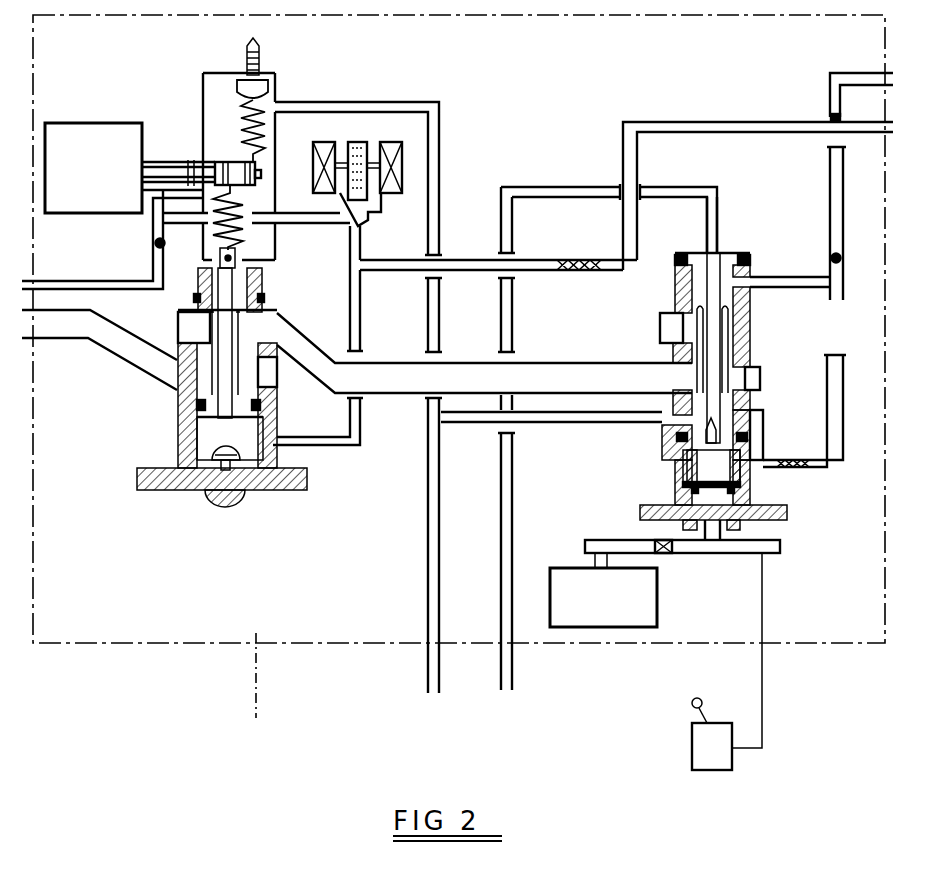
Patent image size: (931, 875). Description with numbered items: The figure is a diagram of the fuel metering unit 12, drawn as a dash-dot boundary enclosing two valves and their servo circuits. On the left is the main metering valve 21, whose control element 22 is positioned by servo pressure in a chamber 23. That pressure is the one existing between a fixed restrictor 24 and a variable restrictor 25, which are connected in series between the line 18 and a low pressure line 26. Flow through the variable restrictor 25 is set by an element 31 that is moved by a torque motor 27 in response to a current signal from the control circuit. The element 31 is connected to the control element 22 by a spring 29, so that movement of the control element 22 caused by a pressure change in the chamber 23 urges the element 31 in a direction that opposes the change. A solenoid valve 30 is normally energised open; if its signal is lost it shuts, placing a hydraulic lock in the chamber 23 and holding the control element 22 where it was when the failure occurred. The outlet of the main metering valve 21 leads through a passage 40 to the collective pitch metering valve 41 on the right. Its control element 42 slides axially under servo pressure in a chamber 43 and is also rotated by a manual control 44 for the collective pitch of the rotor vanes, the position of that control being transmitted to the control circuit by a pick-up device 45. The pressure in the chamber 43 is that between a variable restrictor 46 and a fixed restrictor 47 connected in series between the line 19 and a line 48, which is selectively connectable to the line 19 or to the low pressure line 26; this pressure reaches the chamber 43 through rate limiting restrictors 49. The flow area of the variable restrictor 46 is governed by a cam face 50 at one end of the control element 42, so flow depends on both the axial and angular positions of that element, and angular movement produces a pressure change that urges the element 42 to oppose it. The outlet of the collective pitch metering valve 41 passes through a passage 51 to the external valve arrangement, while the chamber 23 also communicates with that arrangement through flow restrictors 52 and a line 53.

The fuel metering unit 12 is at (459, 379).
The line 18 is at (44, 283).
The line 19 is at (512, 682).
The main metering valve 21 is at (172, 508).
The control element 22 is at (237, 393).
The chamber 23 is at (270, 452).
The fixed restrictor 24 is at (156, 243).
The variable restrictor 25 is at (162, 162).
The low pressure line 26 is at (430, 675).
The torque motor 27 is at (93, 135).
The spring 29 is at (235, 238).
The solenoid valve 30 is at (364, 246).
The element 31 is at (188, 172).
The passage 40 is at (541, 375).
The collective pitch metering valve 41 is at (812, 542).
The control element 42 is at (712, 378).
The chamber 43 is at (737, 500).
The manual control 44 is at (700, 747).
The pick-up device 45 is at (650, 590).
The variable restrictor 46 is at (745, 280).
The fixed restrictor 47 is at (843, 258).
The line 48 is at (888, 80).
The rate limiting restrictors 49 is at (797, 457).
The cam face 50 is at (703, 264).
The passage 51 is at (868, 330).
The flow restrictors 52 is at (590, 275).
The line 53 is at (870, 133).